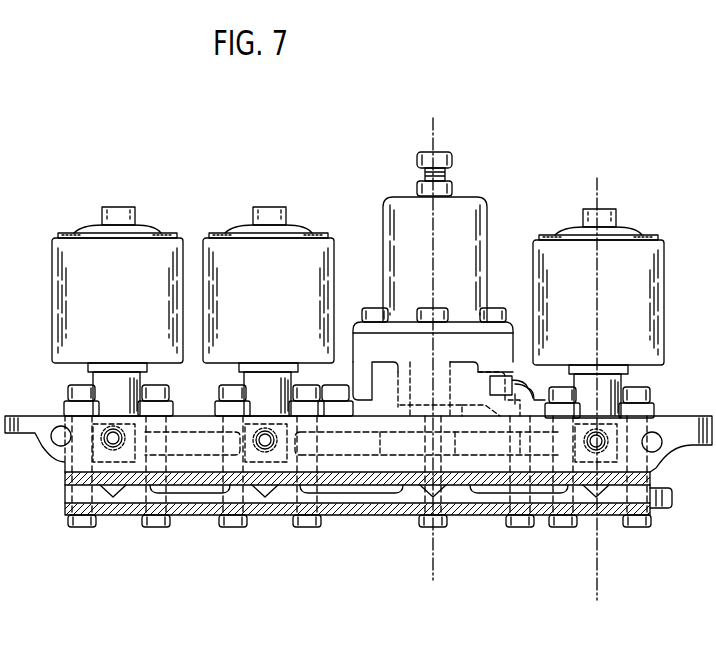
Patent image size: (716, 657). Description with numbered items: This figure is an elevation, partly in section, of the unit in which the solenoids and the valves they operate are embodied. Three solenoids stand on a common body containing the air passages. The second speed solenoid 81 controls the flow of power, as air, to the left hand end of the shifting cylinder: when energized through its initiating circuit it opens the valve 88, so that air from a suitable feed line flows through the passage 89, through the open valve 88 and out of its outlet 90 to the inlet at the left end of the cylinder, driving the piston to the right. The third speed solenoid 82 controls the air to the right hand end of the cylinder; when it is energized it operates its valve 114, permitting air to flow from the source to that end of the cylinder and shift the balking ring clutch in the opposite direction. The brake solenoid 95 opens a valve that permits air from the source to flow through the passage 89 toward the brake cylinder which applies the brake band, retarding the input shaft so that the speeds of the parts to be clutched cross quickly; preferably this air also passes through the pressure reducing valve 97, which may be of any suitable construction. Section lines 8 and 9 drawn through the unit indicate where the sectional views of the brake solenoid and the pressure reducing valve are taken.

The solenoid 82 is at (117, 311).
The solenoid 81 is at (268, 311).
The pressure reducing valve 97 is at (449, 284).
The brake solenoid 95 is at (598, 313).
The valve 88 is at (282, 450).
The passage 89 is at (180, 497).
The outlet 90 is at (262, 441).
The valve 114 is at (98, 455).
The section line 9- 9 is at (444, 114).
The section line 8- 8 is at (608, 174).